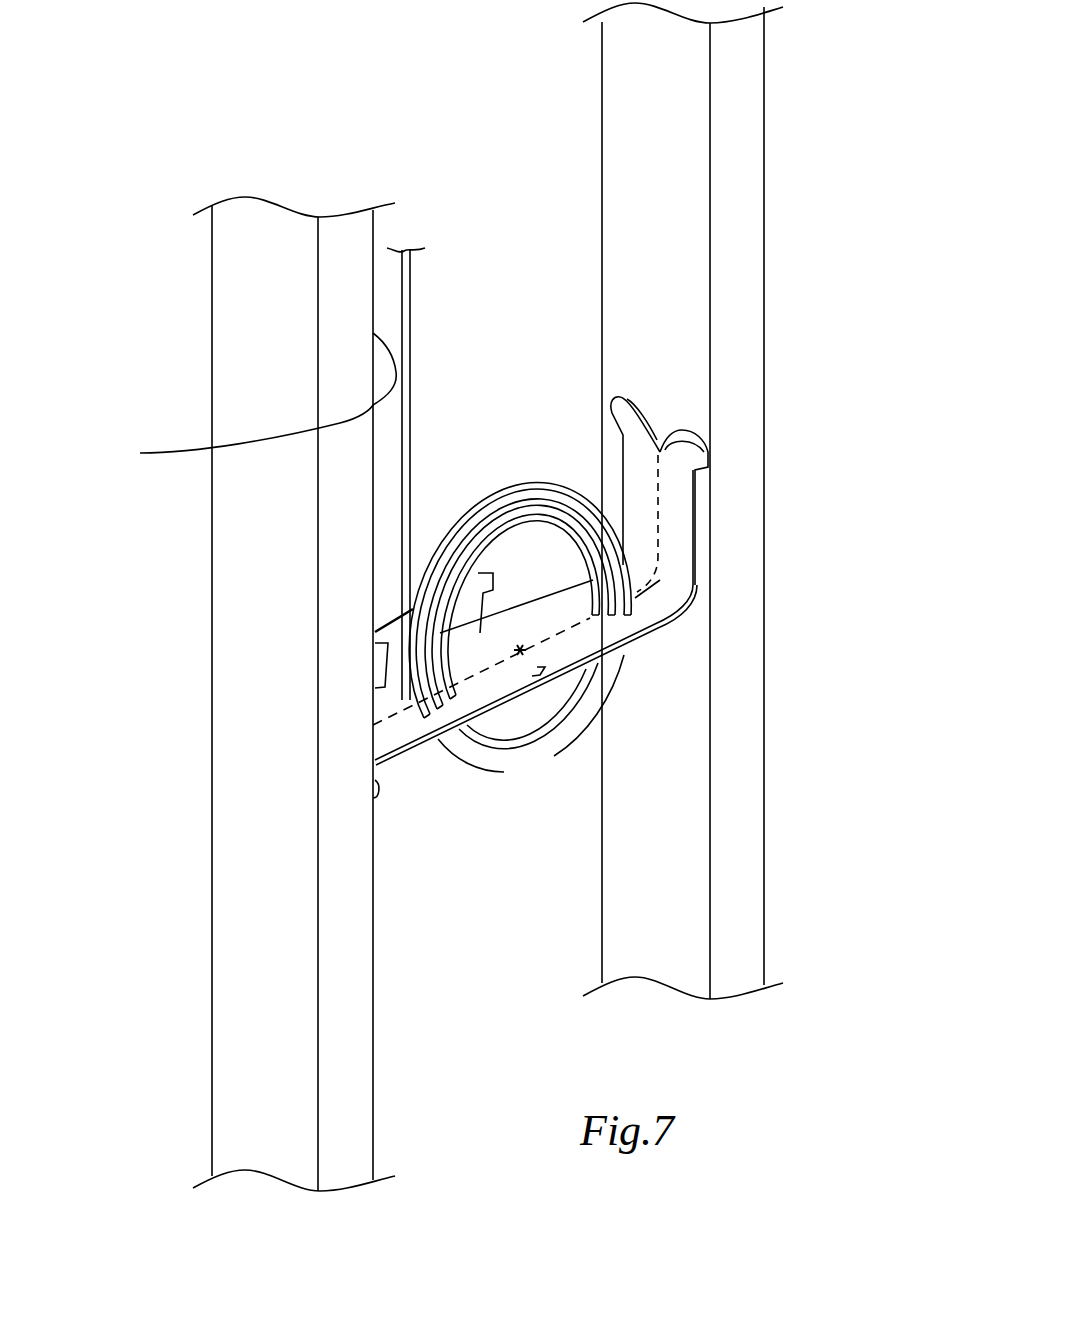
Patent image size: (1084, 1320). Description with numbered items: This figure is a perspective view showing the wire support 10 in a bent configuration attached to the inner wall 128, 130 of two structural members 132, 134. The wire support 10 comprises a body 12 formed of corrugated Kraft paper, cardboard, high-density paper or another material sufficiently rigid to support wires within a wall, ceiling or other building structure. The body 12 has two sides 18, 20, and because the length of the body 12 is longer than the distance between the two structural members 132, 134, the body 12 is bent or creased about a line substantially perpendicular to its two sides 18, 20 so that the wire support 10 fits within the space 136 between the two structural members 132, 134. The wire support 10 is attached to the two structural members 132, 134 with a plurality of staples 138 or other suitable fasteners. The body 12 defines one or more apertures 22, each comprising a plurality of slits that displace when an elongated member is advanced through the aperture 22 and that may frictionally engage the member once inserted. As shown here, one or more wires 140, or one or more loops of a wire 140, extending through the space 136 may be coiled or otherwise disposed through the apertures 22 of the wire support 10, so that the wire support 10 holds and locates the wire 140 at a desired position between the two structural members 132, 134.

The wire support 10 is at (648, 593).
The body 12 is at (413, 757).
The side 18 is at (658, 622).
The side 20 is at (578, 582).
The aperture 22 is at (519, 657).
The inner wall 128 is at (239, 401).
The inner wall 130 is at (672, 142).
The structural member 132 is at (277, 292).
The structural member 134 is at (740, 82).
The space 136 is at (530, 352).
The staple 138 is at (644, 517).
The wire 140 is at (403, 480).